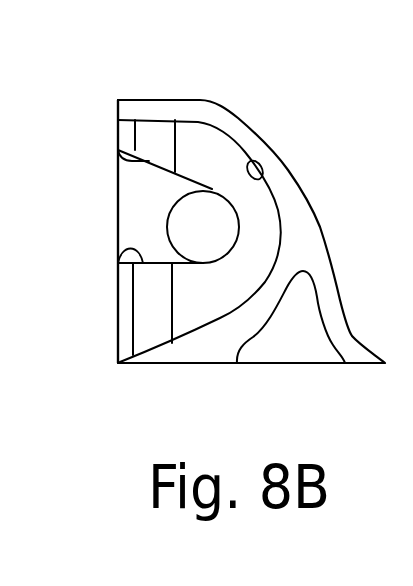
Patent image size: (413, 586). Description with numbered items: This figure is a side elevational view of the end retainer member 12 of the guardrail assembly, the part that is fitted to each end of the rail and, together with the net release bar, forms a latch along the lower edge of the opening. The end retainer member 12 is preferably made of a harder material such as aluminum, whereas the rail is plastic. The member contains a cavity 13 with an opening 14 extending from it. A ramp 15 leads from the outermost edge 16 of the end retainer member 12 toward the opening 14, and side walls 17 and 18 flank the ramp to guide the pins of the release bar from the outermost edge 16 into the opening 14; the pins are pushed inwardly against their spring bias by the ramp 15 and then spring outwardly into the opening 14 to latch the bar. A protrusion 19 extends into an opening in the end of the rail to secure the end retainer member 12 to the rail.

The end retainer member 12 is at (247, 113).
The cavity 13 is at (262, 178).
The opening 14 is at (208, 245).
The ramp 15 is at (128, 188).
The outermost edge 16 is at (118, 210).
The side wall 17 is at (118, 248).
The side wall 18 is at (118, 150).
The protrusion 19 is at (287, 340).